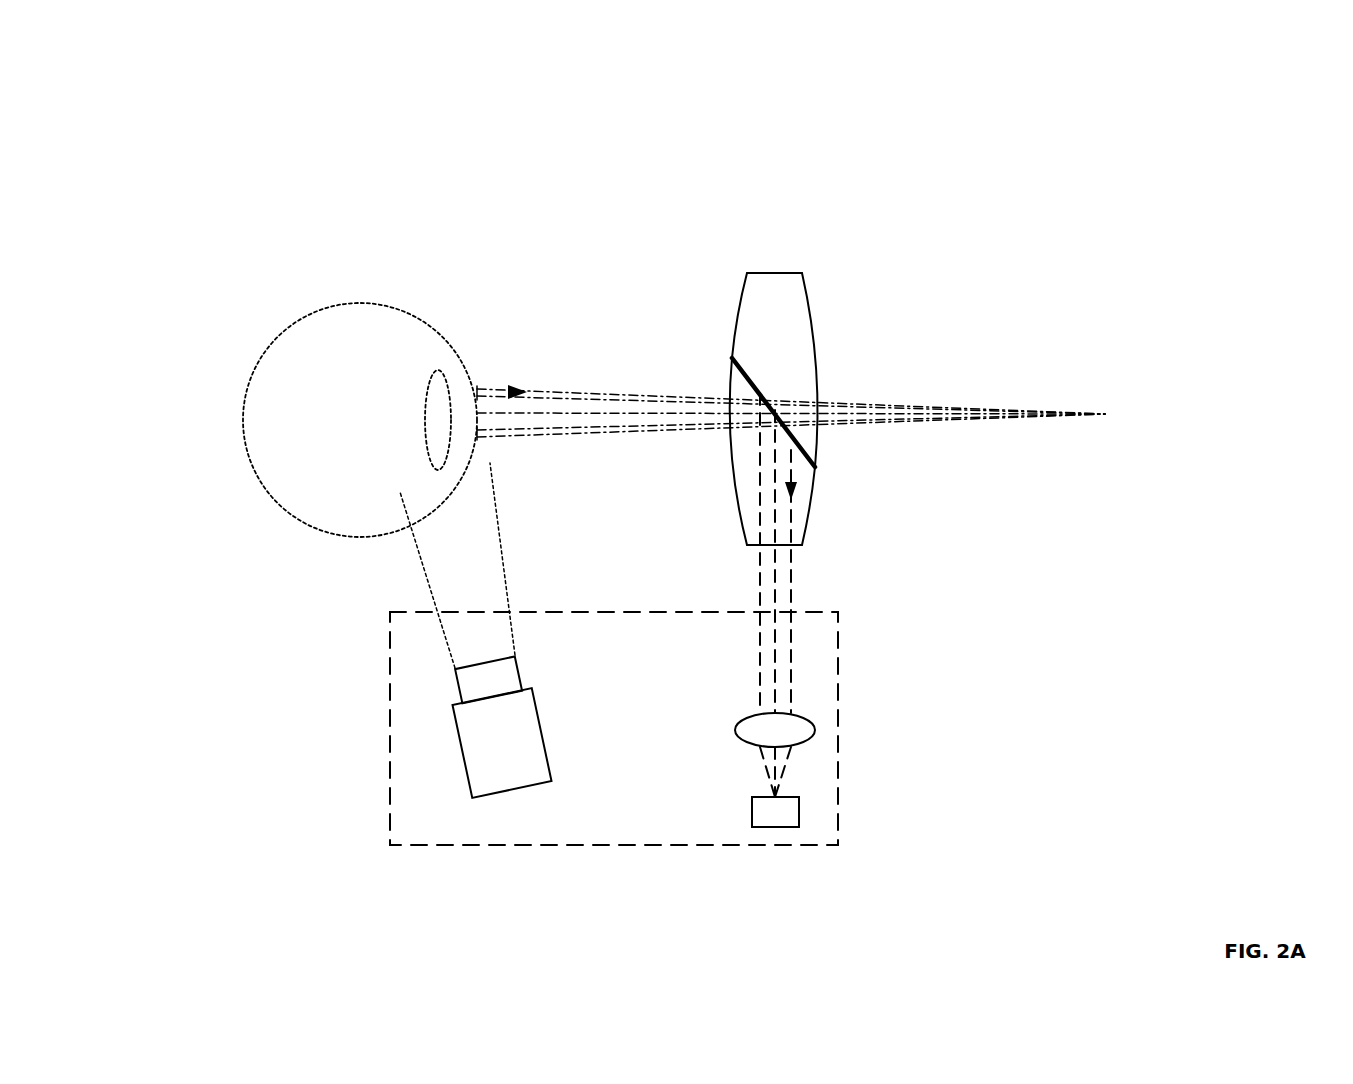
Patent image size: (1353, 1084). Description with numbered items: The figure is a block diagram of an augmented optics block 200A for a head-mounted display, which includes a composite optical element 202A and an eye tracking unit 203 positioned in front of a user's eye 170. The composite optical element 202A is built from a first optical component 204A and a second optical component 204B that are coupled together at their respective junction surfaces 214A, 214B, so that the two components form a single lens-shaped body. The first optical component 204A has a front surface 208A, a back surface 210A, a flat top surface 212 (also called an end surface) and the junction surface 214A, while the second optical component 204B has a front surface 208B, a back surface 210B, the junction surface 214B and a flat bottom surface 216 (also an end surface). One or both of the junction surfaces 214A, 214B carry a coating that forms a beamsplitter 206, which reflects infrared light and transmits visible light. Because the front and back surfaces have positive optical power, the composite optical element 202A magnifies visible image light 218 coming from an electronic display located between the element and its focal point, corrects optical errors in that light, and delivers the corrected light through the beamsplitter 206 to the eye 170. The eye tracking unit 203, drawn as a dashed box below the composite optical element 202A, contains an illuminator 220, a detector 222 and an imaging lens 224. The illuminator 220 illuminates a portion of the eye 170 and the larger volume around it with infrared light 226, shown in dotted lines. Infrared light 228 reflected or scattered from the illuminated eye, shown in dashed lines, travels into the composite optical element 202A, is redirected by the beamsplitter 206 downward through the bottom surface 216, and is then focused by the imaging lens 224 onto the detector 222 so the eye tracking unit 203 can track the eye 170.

The augmented optics block 200A is at (107, 75).
The eye 170 is at (313, 387).
The composite optical element 202A is at (814, 386).
The first optical component 204A is at (800, 259).
The second optical component 204B is at (834, 544).
The beamsplitter 206 is at (812, 405).
The front surface 208A is at (736, 302).
The front surface 208B is at (733, 477).
The back surface 210A is at (785, 330).
The back surface 210B is at (808, 537).
The top surface 212 is at (772, 270).
The junction surface 214A is at (899, 437).
The junction surface 214B is at (735, 374).
The bottom surface 216 is at (760, 547).
The visible image light 218 is at (1068, 412).
The eye tracking unit 203 is at (388, 823).
The illuminator 220 is at (503, 743).
The detector 222 is at (798, 822).
The imaging lens 224 is at (735, 722).
The infrared light 226 is at (420, 575).
The reflected infrared light 228 is at (798, 638).